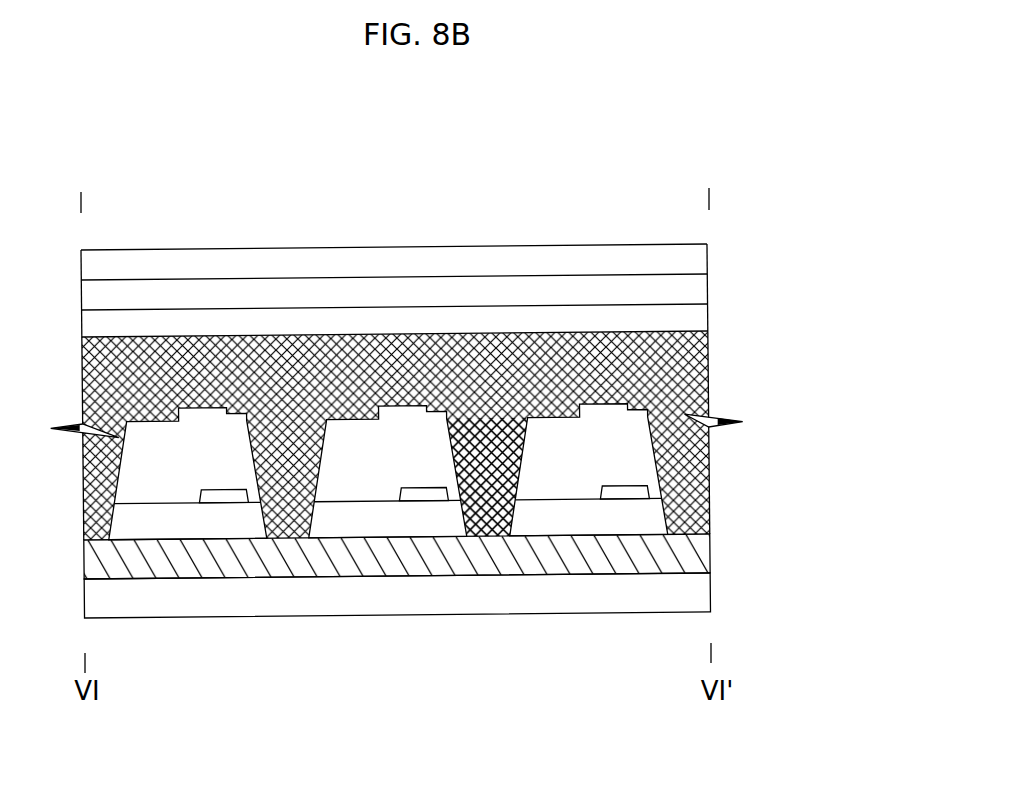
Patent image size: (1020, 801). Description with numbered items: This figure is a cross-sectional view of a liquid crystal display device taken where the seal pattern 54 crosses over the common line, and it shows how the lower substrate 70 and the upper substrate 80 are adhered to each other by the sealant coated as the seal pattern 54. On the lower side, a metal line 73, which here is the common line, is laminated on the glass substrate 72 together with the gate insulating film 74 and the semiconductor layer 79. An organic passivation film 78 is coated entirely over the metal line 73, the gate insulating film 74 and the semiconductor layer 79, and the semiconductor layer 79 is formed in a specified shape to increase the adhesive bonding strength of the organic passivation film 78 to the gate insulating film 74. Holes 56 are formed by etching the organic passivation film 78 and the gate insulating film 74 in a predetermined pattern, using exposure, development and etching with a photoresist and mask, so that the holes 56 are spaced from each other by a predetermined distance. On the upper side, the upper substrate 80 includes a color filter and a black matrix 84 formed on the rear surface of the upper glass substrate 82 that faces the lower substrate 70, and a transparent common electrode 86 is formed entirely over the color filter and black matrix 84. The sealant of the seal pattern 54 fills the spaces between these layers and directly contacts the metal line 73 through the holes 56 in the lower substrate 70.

The seal pattern 54 is at (708, 353).
The holes 56 is at (488, 523).
The lower substrate 70 is at (482, 510).
The glass substrate 72 is at (447, 595).
The metal line 73 is at (708, 550).
The gate insulating film 74 is at (660, 517).
The organic passivation film 78 is at (640, 460).
The semiconductor layer 79 is at (225, 495).
The upper substrate 80 is at (475, 287).
The upper glass substrate 82 is at (708, 258).
The color filter and black matrix 84 is at (708, 288).
The transparent common electrode 86 is at (708, 317).